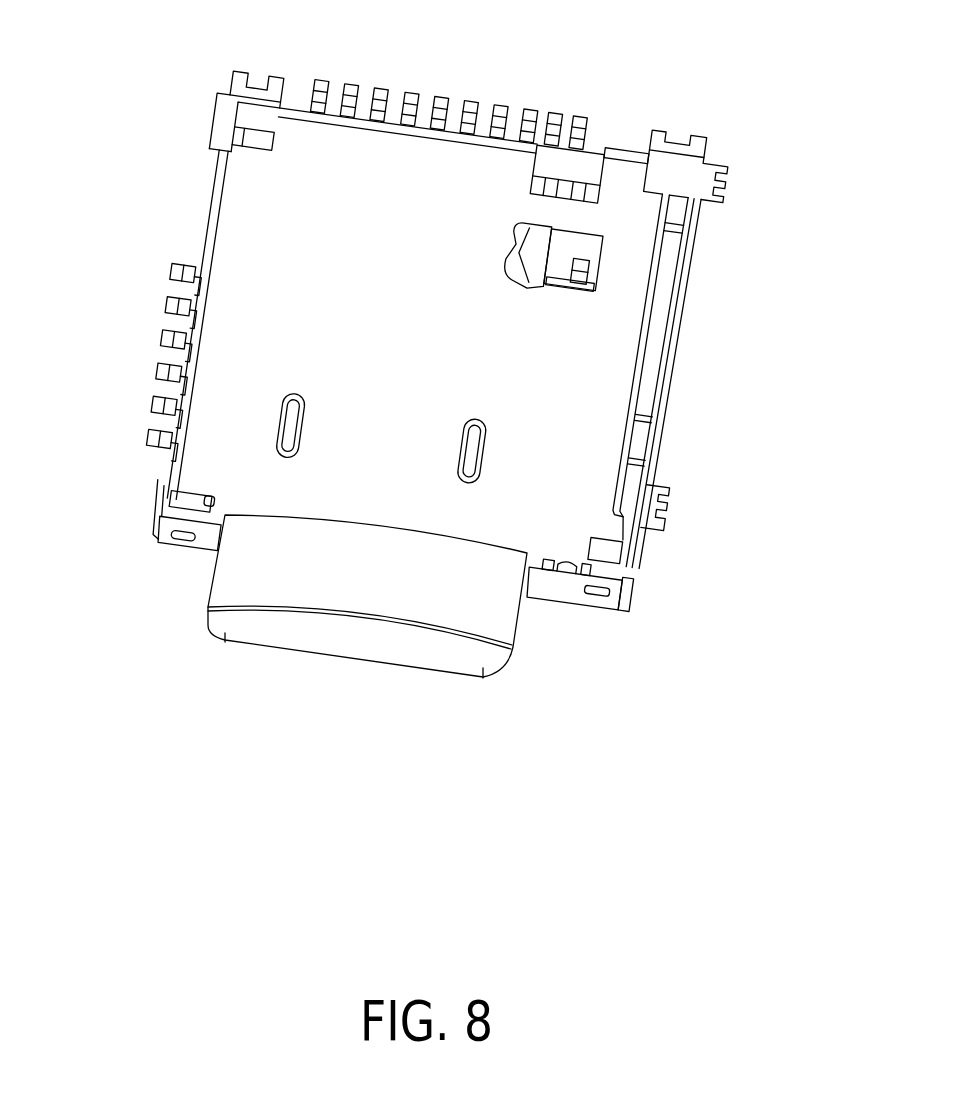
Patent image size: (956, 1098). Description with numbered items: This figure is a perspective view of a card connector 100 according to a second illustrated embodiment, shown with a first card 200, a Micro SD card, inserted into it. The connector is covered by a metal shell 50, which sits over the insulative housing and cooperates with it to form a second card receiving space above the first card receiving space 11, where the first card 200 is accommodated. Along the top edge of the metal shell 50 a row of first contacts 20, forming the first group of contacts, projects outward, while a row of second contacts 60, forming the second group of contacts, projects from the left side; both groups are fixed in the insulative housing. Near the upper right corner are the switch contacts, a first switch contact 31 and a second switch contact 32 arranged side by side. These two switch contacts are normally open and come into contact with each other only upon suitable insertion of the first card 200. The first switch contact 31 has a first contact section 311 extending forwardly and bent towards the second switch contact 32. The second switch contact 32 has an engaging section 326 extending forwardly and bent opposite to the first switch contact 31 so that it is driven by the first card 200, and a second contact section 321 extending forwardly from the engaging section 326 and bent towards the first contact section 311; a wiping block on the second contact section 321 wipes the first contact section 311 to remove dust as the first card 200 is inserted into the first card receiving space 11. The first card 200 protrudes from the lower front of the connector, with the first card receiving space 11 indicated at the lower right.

The card connector 100 is at (262, 200).
The first card 200 is at (303, 570).
The metal shell 50 is at (557, 383).
The first contacts 20 is at (323, 80).
The second contacts 60 is at (147, 437).
The first switch contact 31 is at (583, 113).
The second switch contact 32 is at (558, 110).
The first contact section 311 is at (552, 285).
The second contact section 321 is at (585, 268).
The engaging section 326 is at (545, 247).
The first card receiving space 11 is at (527, 585).